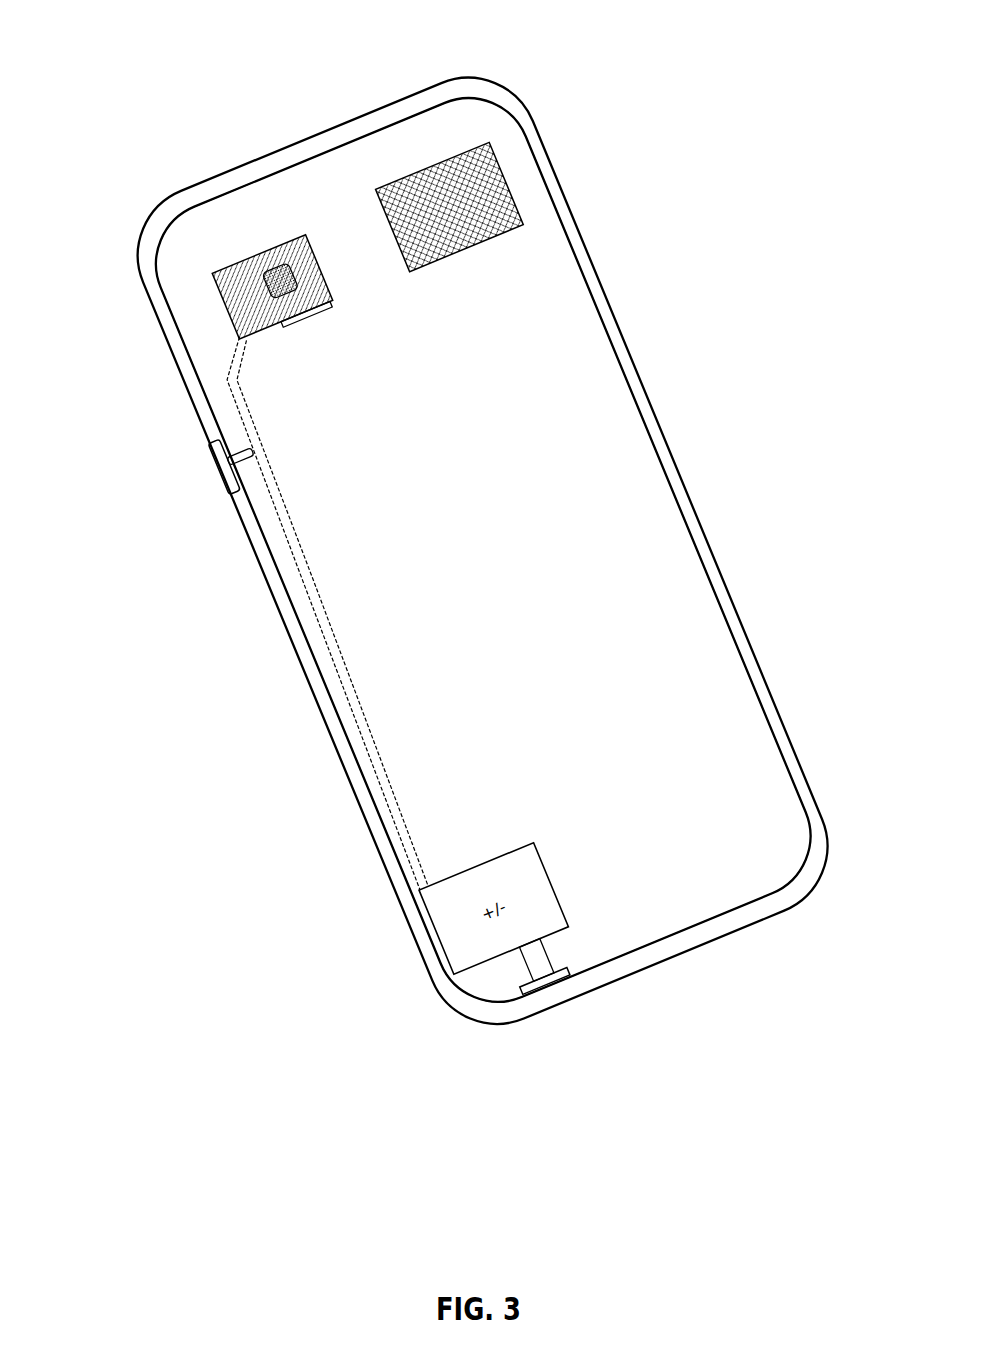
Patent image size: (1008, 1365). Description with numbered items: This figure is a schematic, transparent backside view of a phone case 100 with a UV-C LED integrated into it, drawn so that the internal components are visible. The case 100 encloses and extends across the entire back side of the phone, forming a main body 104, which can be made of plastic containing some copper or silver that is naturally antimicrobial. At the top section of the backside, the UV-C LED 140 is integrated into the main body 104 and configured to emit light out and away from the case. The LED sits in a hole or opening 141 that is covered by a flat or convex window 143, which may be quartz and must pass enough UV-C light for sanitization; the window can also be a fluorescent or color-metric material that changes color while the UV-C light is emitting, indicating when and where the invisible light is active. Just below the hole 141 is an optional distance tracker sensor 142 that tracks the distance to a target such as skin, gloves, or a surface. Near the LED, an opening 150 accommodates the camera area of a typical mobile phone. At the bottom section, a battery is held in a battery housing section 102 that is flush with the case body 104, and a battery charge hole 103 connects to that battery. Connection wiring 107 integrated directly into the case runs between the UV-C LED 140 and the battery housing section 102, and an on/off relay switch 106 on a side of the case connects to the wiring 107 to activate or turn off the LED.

The phone case 100 is at (313, 132).
The battery housing section 102 is at (698, 917).
The battery charge hole 103 is at (552, 992).
The main body 104 is at (592, 635).
The on/off relay switch 106 is at (218, 472).
The connection wiring 107 is at (323, 642).
The UV-C LED 140 is at (275, 258).
The hole or opening for UV-C LED 141 is at (215, 306).
The distance tracker sensor 142 is at (303, 327).
The window 143 is at (245, 273).
The opening 150 is at (518, 186).